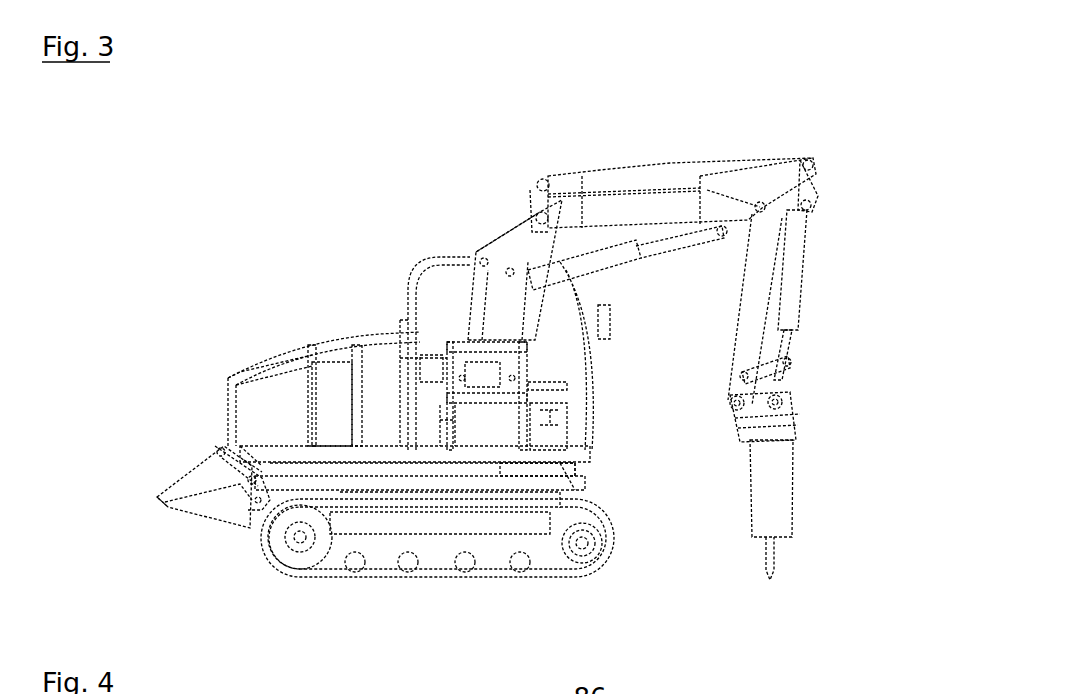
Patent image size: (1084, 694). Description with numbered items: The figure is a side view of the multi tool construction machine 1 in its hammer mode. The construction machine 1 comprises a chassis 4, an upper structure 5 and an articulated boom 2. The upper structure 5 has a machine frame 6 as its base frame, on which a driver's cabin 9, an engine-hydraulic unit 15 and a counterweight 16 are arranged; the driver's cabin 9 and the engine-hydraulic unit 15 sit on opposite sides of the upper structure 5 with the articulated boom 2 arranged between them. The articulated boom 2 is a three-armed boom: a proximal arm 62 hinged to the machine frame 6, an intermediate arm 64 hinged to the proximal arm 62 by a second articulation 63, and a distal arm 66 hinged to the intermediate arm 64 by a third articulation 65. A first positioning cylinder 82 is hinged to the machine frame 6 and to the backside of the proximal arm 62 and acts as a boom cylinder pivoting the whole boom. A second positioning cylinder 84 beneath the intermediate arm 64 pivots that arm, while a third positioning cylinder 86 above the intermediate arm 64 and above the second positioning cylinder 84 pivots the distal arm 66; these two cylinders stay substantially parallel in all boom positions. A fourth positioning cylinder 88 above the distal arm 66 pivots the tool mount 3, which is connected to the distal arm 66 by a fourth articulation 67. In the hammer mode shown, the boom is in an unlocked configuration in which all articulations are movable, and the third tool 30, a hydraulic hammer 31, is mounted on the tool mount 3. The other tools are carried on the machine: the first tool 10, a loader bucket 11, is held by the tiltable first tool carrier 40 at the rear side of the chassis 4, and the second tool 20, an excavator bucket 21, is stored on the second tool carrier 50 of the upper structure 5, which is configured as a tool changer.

The multi tool construction machine 1 is at (852, 128).
The articulated boom 2 is at (675, 202).
The tool mount 3 is at (775, 417).
The chassis 4 is at (407, 521).
The upper structure 5 is at (287, 320).
The machine frame 6 is at (338, 463).
The driver's cabin 9 is at (437, 297).
The first tool 10 is at (205, 493).
The loader bucket 11 is at (230, 500).
The engine-hydraulic unit 15 is at (380, 375).
The counterweight 16 is at (250, 408).
The second tool 20 is at (478, 378).
The excavator bucket 21 is at (513, 385).
The third tool 30 is at (763, 508).
The hammer 31 is at (768, 557).
The first tool carrier 40 is at (275, 498).
The second tool carrier 50 is at (532, 467).
The proximal arm 62 is at (503, 253).
The second articulation 63 is at (540, 218).
The intermediate arm 64 is at (617, 213).
The third articulation 65 is at (762, 203).
The distal arm 66 is at (754, 302).
The fourth articulation 67 is at (727, 403).
The first positioning cylinder 82 is at (465, 320).
The second positioning cylinder 84 is at (605, 253).
The third positioning cylinder 86 is at (658, 177).
The fourth positioning cylinder 88 is at (803, 247).